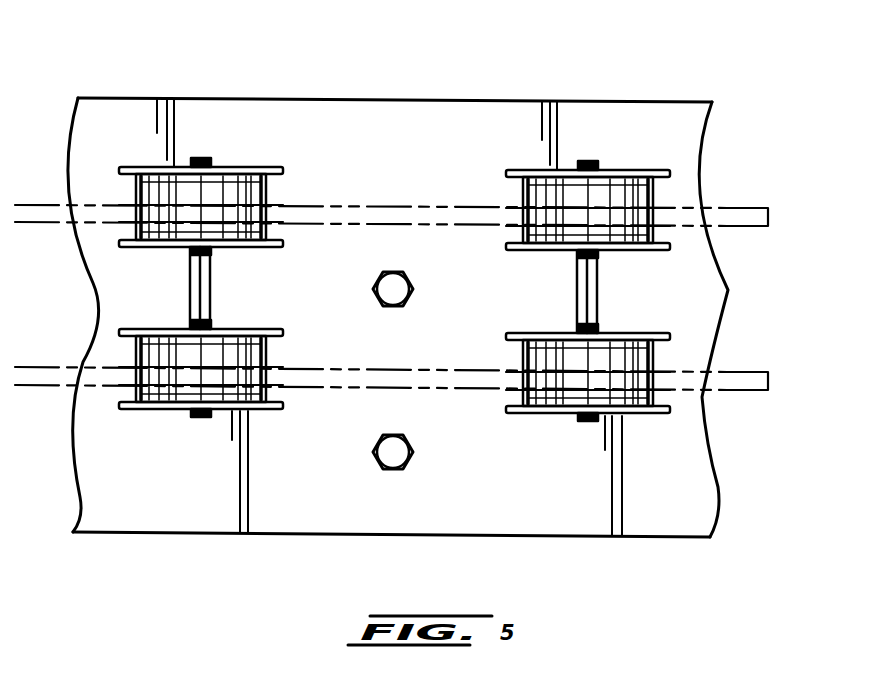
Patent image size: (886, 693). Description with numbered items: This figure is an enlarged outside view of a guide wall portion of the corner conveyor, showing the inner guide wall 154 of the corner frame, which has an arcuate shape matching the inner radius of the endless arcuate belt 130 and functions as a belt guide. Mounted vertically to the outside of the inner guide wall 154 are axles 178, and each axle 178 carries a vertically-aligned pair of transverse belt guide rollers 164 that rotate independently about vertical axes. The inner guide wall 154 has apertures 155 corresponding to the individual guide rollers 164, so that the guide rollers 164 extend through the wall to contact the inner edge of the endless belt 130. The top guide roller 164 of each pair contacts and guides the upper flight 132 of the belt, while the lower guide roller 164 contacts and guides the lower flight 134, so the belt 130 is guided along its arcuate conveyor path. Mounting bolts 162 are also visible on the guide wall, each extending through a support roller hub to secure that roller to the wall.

The endless arcuate belt 130 is at (440, 300).
The upper flight 132 is at (728, 208).
The lower flight 134 is at (729, 393).
The inner guide wall 154 is at (347, 115).
The apertures 155 is at (237, 166).
The mounting bolt 162 is at (400, 297).
The transverse belt guide rollers 164 is at (267, 195).
The axle 178 is at (210, 306).